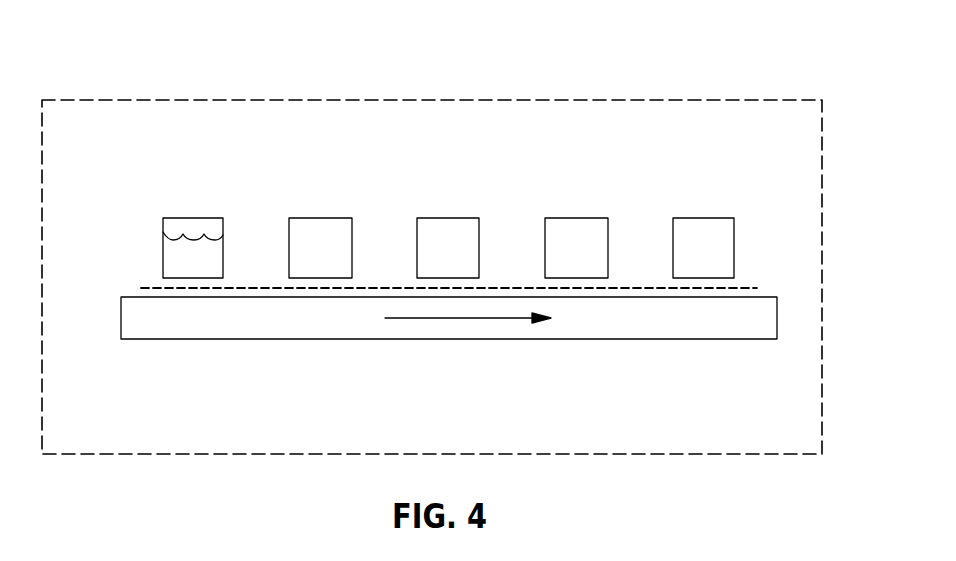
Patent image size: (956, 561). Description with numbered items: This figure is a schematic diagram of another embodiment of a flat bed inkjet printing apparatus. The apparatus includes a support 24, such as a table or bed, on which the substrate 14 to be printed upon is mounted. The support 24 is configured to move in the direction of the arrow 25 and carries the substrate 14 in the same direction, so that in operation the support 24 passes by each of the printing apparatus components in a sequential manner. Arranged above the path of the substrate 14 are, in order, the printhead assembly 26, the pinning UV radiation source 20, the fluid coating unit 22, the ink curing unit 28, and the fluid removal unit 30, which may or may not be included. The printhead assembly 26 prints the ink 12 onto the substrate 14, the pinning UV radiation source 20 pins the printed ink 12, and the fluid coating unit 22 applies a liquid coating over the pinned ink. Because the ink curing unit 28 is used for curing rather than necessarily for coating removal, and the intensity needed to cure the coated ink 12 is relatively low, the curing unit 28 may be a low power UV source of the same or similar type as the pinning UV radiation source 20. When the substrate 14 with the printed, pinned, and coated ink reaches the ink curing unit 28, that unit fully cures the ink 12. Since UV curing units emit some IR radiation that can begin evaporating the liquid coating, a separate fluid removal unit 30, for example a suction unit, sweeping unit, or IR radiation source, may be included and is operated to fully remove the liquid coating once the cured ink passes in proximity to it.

The ink 12 is at (174, 240).
The substrate 14 is at (160, 288).
The pinning UV radiation source 20 is at (320, 218).
The fluid coating unit 22 is at (449, 218).
The support 24 is at (180, 339).
The arrow 25 is at (455, 318).
The printhead assembly 26 is at (193, 218).
The ink curing unit 28 is at (576, 218).
The fluid removal unit 30 is at (705, 218).